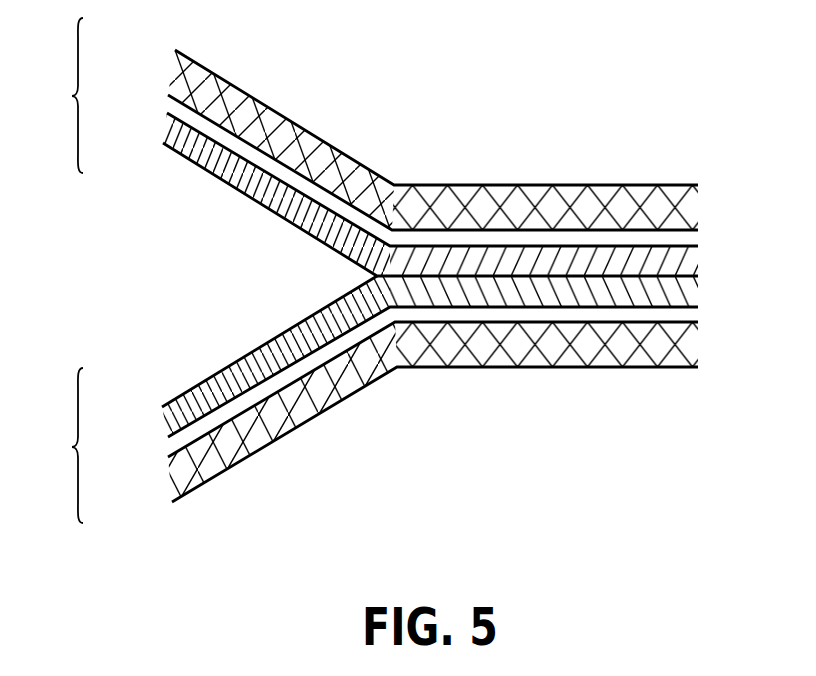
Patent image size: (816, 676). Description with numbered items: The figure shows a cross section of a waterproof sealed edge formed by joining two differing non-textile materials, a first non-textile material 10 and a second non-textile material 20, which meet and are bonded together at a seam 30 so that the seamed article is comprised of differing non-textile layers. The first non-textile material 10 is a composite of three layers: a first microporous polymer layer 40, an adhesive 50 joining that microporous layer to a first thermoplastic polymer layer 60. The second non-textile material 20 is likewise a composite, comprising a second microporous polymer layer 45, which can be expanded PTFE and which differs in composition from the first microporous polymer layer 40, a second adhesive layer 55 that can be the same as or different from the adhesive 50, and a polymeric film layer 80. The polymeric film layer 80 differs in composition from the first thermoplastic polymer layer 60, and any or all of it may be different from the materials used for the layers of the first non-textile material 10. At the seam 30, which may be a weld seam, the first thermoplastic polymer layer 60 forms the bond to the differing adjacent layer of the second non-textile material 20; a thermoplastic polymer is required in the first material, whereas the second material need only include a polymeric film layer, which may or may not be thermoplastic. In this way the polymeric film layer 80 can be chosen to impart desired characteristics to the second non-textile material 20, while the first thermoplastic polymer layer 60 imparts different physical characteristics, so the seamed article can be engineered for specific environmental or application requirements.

The first non-textile material 10 is at (55, 445).
The second non-textile material 20 is at (55, 95).
The seam 30 is at (377, 276).
The first microporous polymer layer 40 is at (172, 483).
The second microporous polymer layer 45 is at (172, 77).
The adhesive 50 is at (167, 445).
The second adhesive layer 55 is at (168, 107).
The first thermoplastic polymer layer 60 is at (165, 417).
The polymeric film layer 80 is at (165, 133).